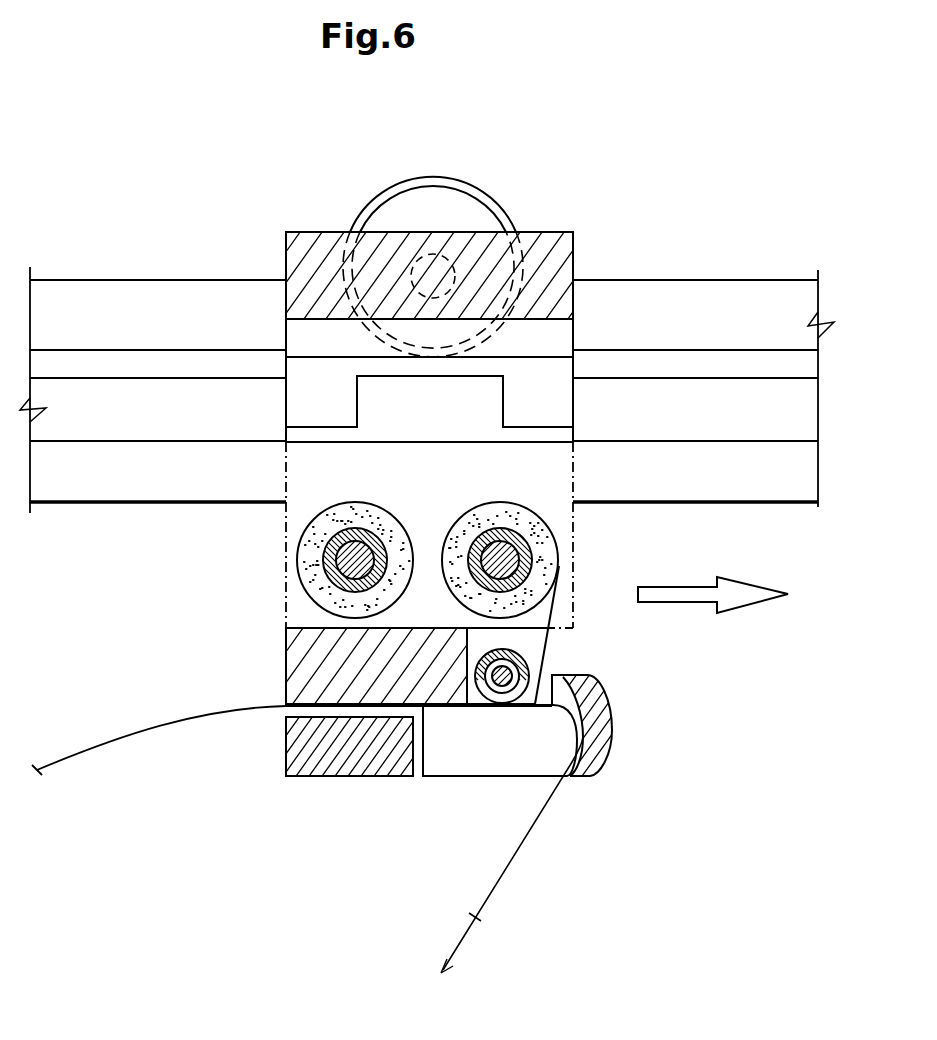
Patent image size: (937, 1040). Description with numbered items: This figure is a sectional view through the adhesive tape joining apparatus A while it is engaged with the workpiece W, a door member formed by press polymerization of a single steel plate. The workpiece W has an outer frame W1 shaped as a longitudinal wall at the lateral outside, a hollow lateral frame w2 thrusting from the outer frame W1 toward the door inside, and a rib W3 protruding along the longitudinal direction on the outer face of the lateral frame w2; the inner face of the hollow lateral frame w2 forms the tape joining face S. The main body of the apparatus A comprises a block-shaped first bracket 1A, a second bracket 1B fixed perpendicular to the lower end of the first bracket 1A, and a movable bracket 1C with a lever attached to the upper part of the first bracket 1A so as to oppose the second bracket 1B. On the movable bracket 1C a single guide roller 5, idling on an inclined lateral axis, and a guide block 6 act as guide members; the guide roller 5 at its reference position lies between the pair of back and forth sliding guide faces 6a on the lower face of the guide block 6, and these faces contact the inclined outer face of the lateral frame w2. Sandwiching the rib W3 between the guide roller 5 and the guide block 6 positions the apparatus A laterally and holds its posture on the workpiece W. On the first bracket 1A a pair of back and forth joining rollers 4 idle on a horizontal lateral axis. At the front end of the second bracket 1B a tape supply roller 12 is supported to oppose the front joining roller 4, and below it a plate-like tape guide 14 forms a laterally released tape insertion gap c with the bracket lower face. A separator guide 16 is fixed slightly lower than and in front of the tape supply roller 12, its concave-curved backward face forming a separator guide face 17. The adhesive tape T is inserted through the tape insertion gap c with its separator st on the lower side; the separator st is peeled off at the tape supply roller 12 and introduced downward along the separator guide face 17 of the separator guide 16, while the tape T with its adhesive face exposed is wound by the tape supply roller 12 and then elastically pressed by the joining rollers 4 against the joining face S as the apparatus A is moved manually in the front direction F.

The adhesive tape joining apparatus A is at (313, 215).
The first bracket 1A is at (283, 522).
The second bracket 1B is at (286, 665).
The movable bracket 1C is at (286, 252).
The joining rollers 4 is at (300, 598).
The guide roller 5 is at (473, 195).
The guide block 6 is at (286, 400).
The sliding guide faces 6a is at (318, 427).
The tape supply roller 12 is at (475, 670).
The tape guide 14 is at (313, 777).
The separator guide 16 is at (607, 763).
The separator guide face 17 is at (598, 692).
The workpiece W is at (728, 273).
The outer frame W1 is at (648, 279).
The rib W3 is at (638, 351).
The lateral frame w2 is at (755, 490).
The tape joining face S is at (633, 503).
The adhesive tape T is at (108, 503).
The front direction F is at (725, 596).
The tape insertion gap c is at (390, 717).
The separator st is at (500, 876).